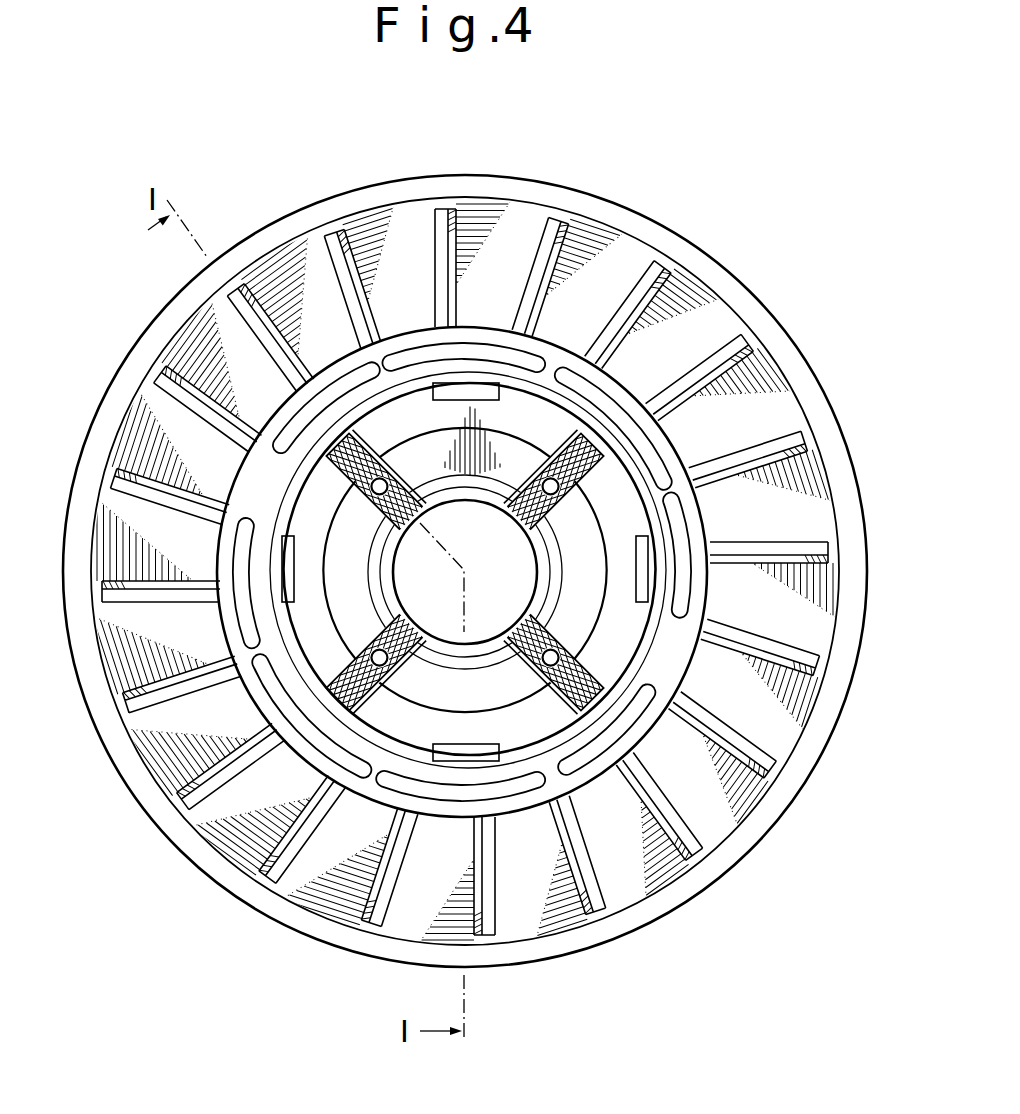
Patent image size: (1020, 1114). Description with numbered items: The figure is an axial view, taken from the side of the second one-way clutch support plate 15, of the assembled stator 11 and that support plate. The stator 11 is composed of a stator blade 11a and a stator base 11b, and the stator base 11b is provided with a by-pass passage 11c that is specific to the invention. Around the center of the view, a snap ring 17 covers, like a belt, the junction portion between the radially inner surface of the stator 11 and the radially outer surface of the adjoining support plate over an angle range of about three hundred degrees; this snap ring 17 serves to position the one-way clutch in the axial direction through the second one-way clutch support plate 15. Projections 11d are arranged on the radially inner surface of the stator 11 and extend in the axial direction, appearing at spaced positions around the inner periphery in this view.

The stator 11 is at (392, 174).
The stator blade 11a is at (268, 300).
The stator base 11b is at (693, 463).
The by-pass passage 11c is at (340, 387).
The projections 11d is at (475, 388).
The second one-way clutch support plate 15 is at (866, 790).
The snap ring 17 is at (573, 418).